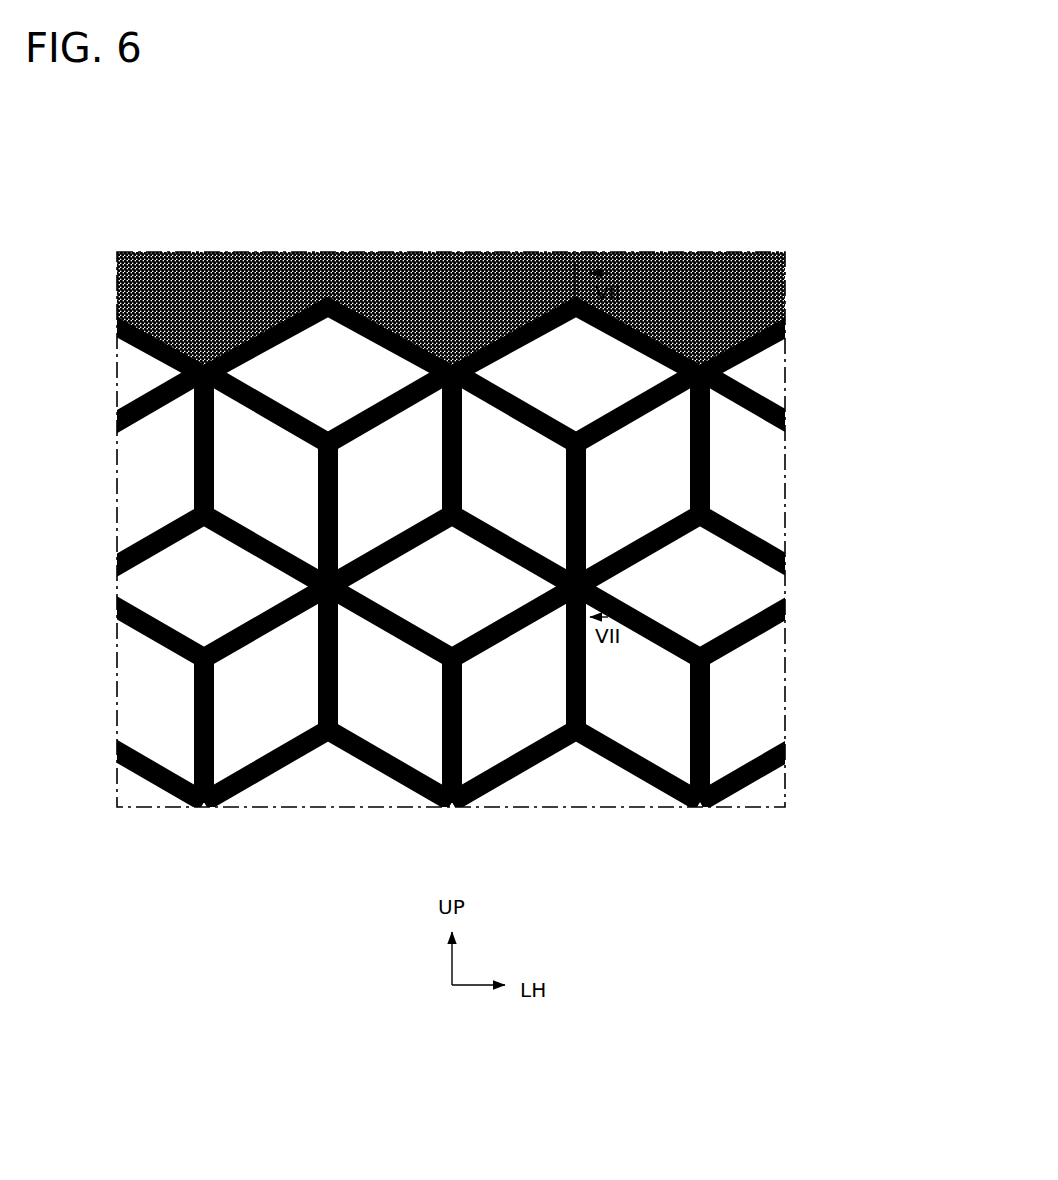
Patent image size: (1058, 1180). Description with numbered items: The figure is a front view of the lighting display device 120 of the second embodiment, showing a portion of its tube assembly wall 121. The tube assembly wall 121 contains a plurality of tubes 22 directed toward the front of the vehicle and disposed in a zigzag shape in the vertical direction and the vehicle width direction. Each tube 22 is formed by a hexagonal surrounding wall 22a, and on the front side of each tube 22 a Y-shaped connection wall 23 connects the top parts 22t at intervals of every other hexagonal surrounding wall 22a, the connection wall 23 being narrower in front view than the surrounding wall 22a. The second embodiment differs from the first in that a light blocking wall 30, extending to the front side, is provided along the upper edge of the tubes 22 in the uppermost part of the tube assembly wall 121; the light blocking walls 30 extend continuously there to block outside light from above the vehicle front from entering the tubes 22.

The lighting display device 120 is at (451, 529).
The tube assembly wall 121 is at (630, 238).
The light blocking wall 30 is at (643, 332).
The tube 22 is at (485, 469).
The hexagonal surrounding wall 22a is at (703, 442).
The top part 22t is at (457, 400).
The Y-shaped connection wall 23 is at (370, 417).